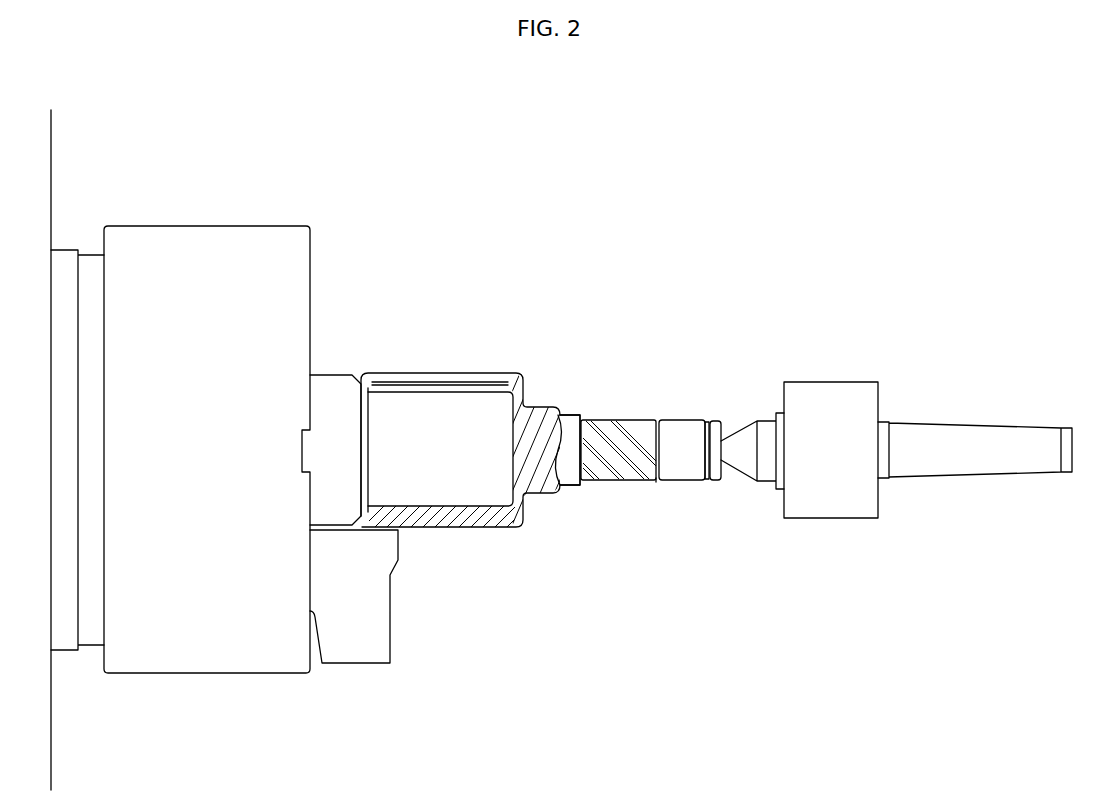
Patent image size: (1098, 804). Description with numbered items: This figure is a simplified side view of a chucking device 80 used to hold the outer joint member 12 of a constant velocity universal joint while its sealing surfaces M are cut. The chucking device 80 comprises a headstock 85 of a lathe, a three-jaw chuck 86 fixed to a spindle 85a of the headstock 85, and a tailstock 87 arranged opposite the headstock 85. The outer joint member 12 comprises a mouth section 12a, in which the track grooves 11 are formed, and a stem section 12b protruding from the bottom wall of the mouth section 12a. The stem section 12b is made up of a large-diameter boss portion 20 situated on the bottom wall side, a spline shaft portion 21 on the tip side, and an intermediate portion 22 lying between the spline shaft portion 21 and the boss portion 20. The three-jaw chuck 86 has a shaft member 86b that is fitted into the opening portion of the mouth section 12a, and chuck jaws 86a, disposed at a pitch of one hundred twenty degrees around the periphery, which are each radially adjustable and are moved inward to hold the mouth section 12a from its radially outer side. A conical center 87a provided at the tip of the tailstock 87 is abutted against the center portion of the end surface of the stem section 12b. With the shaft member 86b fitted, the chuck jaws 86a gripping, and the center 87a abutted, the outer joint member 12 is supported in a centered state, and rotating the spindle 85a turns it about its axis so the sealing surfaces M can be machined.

The chucking device 80 is at (353, 680).
The headstock 85 is at (24, 169).
The spindle 85a is at (93, 300).
The three-jaw chuck 86 is at (210, 650).
The chuck jaws 86a is at (376, 626).
The shaft member 86b is at (327, 400).
The track grooves 11 is at (441, 382).
The outer joint member 12 is at (485, 468).
The mouth section 12a is at (439, 518).
The stem section 12b is at (648, 484).
The sealing surfaces M is at (557, 410).
The boss portion 20 is at (569, 478).
The spline shaft portion 21 is at (682, 432).
The intermediate portion 22 is at (592, 482).
The tailstock 87 is at (952, 436).
The center 87a is at (738, 458).